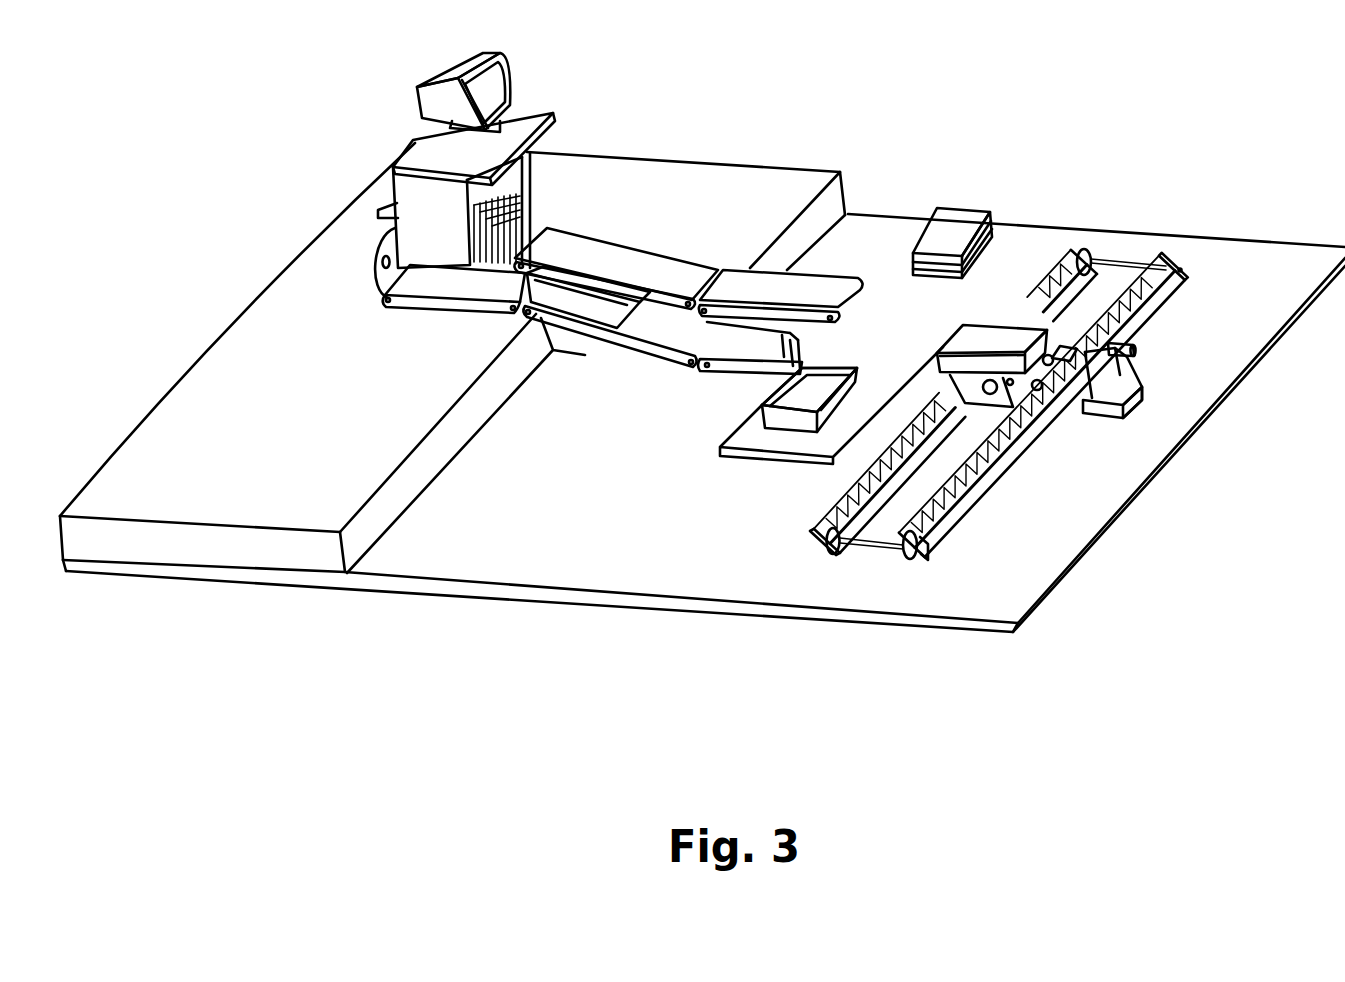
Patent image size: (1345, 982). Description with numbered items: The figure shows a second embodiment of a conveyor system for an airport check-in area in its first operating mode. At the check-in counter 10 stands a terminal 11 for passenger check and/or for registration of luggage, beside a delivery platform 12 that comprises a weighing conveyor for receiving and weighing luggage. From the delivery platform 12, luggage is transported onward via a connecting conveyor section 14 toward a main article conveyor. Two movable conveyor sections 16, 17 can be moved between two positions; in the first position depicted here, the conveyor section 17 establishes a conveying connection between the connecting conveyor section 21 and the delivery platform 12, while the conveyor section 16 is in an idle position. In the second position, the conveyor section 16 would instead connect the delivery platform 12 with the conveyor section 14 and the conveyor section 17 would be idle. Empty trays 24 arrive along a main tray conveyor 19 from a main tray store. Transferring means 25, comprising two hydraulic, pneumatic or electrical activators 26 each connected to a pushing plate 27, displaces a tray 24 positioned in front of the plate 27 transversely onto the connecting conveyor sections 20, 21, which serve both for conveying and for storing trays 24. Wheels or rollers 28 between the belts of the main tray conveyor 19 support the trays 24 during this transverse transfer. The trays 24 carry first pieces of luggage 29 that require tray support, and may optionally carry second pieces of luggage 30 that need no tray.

The check-in counter 10 is at (381, 125).
The terminal 11 is at (490, 84).
The delivery platform 12 is at (443, 289).
The connecting conveyor section 14 is at (807, 291).
The movable conveyor section 16 is at (623, 260).
The movable conveyor section 17 is at (657, 335).
The main tray conveyor 19 is at (1158, 276).
The connecting conveyor section 20 is at (948, 378).
The connecting conveyor section 21 is at (740, 367).
The tray 24 is at (552, 322).
The transferring means 25 is at (1104, 387).
The activator 26 is at (1132, 348).
The pushing plate 27 is at (1071, 348).
The wheels or rollers 28 is at (1000, 410).
The first piece of luggage 29 is at (380, 255).
The second piece of luggage 30 is at (960, 232).